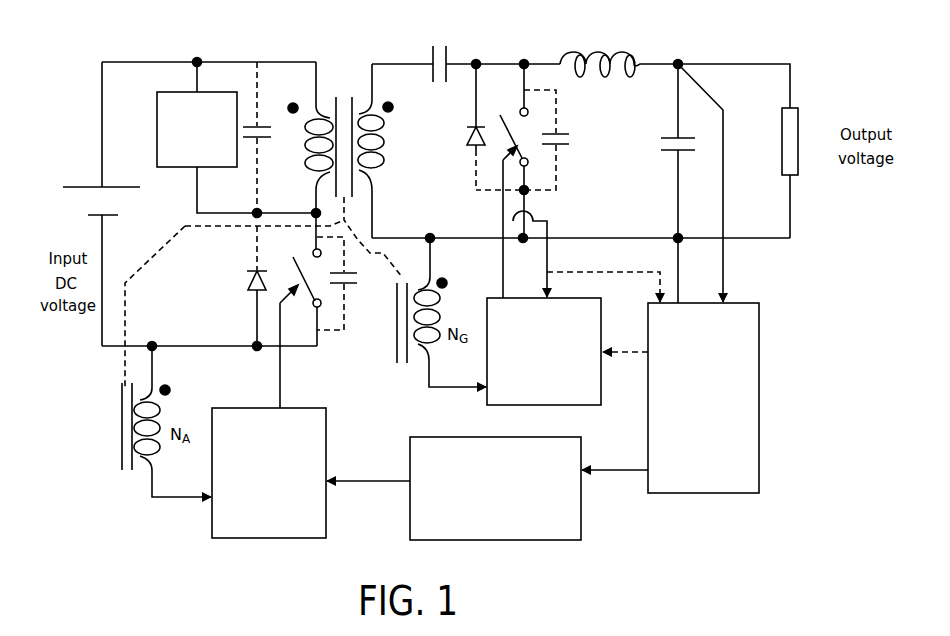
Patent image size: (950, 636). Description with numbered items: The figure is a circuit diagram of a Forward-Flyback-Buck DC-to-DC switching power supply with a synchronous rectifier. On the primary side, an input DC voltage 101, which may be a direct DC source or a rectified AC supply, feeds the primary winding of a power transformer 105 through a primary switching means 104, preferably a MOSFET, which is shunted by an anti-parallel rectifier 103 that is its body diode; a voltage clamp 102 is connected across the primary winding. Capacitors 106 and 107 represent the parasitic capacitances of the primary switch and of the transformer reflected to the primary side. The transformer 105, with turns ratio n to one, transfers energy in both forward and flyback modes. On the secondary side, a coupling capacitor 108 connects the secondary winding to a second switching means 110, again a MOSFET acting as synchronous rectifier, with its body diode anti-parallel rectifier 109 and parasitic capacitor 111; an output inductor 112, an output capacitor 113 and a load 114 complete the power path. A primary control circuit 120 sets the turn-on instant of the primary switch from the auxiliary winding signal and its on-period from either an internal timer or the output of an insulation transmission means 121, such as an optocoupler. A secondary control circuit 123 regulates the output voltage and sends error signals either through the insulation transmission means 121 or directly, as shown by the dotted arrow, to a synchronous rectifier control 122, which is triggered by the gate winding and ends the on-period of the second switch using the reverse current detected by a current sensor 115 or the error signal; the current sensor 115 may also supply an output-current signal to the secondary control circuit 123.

The input DC voltage 101 is at (100, 186).
The voltage clamp 102 is at (217, 92).
The anti-parallel rectifier 103 is at (247, 283).
The primary switching means 104 is at (318, 308).
The power transformer 105 is at (357, 95).
The capacitor 106 is at (252, 140).
The capacitor 107 is at (354, 282).
The coupling capacitor 108 is at (458, 53).
The anti-parallel rectifier 109 is at (463, 140).
The second switching means 110 is at (538, 134).
The capacitor 111 is at (562, 147).
The output inductor 112 is at (636, 60).
The output capacitor 113 is at (677, 150).
The load 114 is at (795, 175).
The current sensor 115 is at (513, 221).
The primary control circuit 120 is at (282, 538).
The insulation transmission means 121 is at (485, 540).
The synchronous rectifier control 122 is at (602, 385).
The secondary control circuit 123 is at (706, 493).